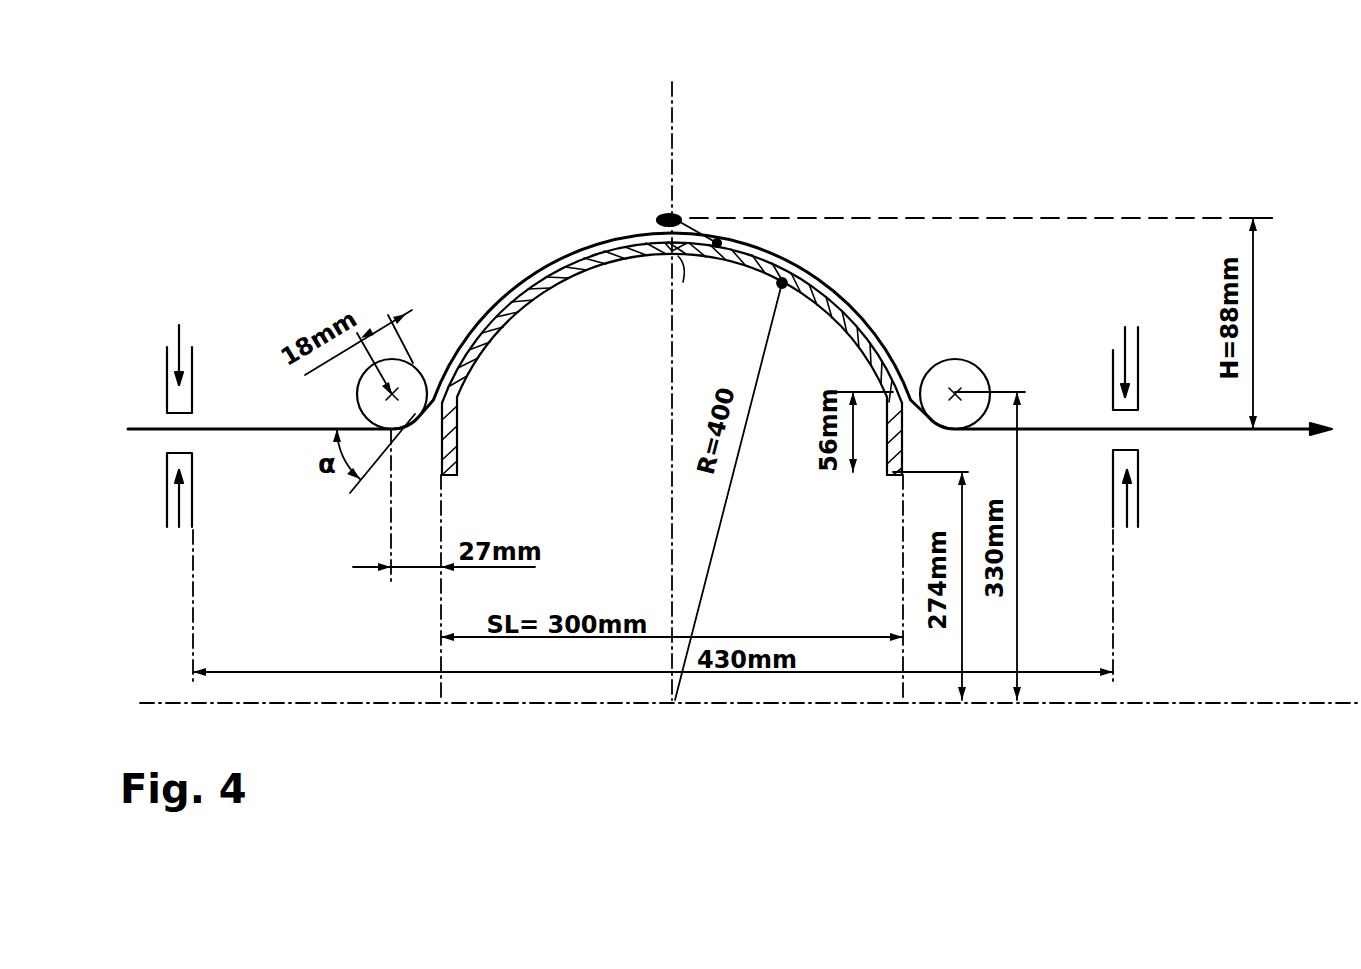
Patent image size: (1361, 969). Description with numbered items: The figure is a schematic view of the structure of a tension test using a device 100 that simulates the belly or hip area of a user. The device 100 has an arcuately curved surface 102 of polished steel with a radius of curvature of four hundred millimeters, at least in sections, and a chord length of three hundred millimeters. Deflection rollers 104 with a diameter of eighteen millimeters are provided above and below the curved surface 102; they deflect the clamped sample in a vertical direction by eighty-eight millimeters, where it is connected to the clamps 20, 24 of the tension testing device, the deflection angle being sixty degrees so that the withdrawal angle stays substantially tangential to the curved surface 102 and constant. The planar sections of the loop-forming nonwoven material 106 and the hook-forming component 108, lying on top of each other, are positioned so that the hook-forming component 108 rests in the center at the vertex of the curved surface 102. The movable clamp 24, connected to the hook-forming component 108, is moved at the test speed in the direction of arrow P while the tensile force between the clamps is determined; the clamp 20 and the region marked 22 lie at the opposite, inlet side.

The clamp 20 is at (167, 397).
The inlet side 22 is at (147, 357).
The movable clamp 24 is at (1140, 390).
The device 100 is at (533, 717).
The arcuately curved surface 102 is at (830, 292).
The deflection rollers 104 is at (370, 403).
The loop-forming nonwoven material 106 is at (593, 246).
The hook-forming component 108 is at (683, 215).